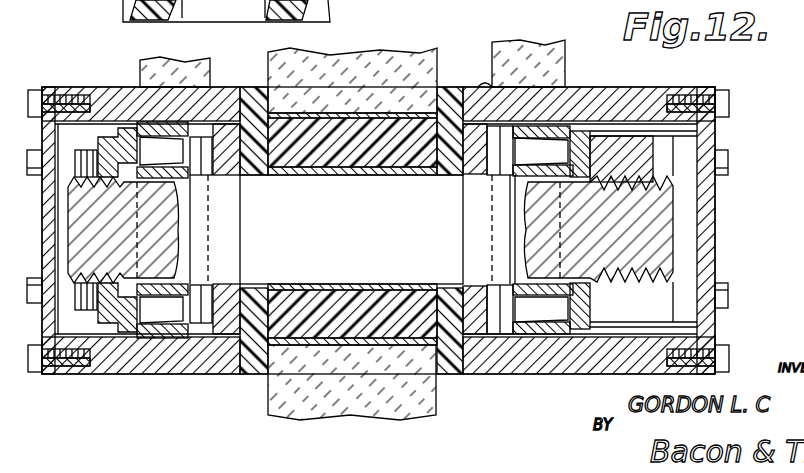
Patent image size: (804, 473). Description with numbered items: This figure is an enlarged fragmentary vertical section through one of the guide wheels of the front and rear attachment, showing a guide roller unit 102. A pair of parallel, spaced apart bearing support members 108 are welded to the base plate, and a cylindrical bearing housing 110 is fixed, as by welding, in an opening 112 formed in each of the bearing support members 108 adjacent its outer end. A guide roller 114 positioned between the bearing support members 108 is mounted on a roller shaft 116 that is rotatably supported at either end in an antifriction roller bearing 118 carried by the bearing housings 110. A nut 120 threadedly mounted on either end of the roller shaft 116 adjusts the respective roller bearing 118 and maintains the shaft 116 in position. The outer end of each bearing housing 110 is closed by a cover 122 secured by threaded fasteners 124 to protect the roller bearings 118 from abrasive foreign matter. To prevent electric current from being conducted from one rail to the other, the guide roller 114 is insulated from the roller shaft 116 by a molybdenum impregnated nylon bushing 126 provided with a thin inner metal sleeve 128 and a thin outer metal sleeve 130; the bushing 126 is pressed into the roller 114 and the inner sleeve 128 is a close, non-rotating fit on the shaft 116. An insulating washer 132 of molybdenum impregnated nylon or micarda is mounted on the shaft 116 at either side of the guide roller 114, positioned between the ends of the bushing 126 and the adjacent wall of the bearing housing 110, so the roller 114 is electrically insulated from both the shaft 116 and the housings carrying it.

The guide roller unit 102 is at (237, 389).
The bearing support members 108 is at (145, 72).
The cylindrical bearing housing 110 is at (657, 87).
The opening 112 is at (487, 85).
The guide roller 114 is at (352, 420).
The roller shaft 116 is at (352, 224).
The antifriction roller bearing 118 is at (165, 135).
The nut 120 is at (655, 153).
The cover 122 is at (50, 90).
The threaded fasteners 124 is at (80, 96).
The molybdenum impregnated nylon bushing 126 is at (399, 158).
The inner metal sleeve 128 is at (274, 173).
The outer metal sleeve 130 is at (403, 112).
The insulating washer 132 is at (255, 88).